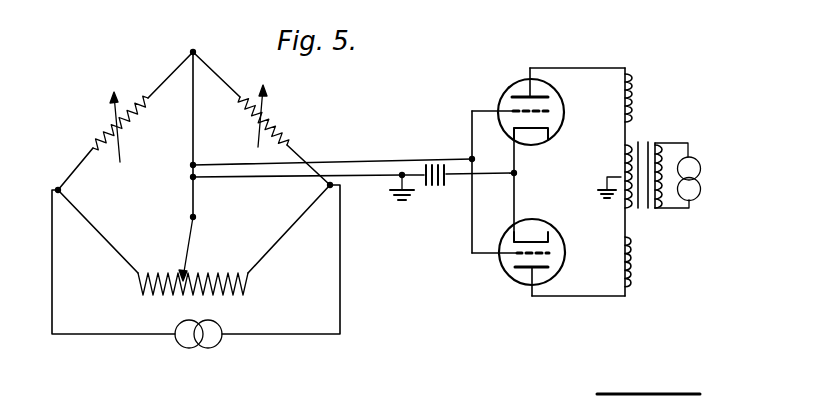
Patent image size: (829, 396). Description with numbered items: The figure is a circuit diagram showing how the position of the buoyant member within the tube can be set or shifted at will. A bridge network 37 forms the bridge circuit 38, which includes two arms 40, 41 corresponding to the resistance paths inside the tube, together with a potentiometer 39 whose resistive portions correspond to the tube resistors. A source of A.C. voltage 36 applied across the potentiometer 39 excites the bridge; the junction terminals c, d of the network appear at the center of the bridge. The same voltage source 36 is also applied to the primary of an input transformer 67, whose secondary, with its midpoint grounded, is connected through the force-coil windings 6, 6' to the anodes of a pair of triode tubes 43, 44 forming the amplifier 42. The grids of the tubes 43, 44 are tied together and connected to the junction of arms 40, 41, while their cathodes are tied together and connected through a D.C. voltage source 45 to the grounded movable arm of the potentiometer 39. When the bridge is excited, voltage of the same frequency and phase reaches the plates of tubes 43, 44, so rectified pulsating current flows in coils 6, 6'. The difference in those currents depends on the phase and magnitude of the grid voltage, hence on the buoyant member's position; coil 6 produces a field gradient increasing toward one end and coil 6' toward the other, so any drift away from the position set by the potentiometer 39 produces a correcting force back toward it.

The bridge circuit 37 is at (194, 165).
The bridge arm 40 is at (101, 129).
The bridge arm 41 is at (290, 136).
The potentiometer 39 is at (240, 290).
The bridge circuit 38 is at (128, 306).
The source of A.C. voltage 36 is at (206, 348).
The bridge terminal c is at (190, 165).
The bridge terminal d is at (190, 177).
The D.C. voltage source 45 is at (438, 188).
The amplifier 42 is at (489, 180).
The triode tube 43 is at (504, 87).
The triode tube 44 is at (510, 283).
The force-coil winding 6 is at (647, 102).
The force-coil winding 6' is at (648, 259).
The input transformer 67 is at (614, 161).